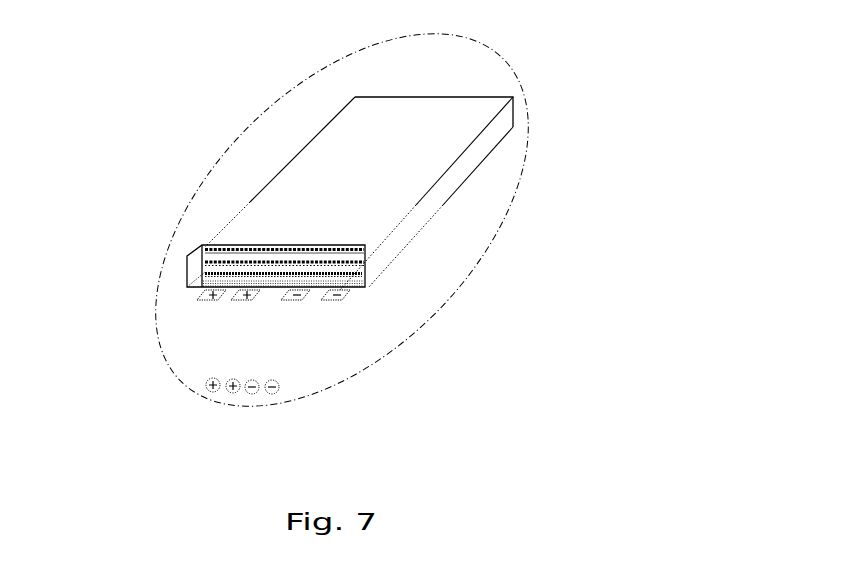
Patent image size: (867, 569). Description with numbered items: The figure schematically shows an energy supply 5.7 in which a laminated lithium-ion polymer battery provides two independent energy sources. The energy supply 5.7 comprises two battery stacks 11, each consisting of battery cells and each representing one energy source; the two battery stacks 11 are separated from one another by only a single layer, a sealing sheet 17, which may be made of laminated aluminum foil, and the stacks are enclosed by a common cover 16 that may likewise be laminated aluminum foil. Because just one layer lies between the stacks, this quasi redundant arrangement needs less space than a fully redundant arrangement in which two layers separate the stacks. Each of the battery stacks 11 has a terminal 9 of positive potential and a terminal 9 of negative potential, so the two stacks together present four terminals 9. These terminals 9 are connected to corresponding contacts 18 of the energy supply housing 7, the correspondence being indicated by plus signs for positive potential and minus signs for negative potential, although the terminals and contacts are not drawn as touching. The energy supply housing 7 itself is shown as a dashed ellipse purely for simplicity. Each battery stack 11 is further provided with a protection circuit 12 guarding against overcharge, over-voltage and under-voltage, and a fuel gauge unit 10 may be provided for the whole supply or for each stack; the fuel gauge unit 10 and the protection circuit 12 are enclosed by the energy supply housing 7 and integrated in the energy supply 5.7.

The energy supply housing 7 is at (246, 132).
The terminal 9 is at (208, 300).
The fuel gauge unit 10 is at (283, 283).
The battery stack 11 is at (353, 250).
The protection circuit 12 is at (188, 283).
The common cover 16 is at (257, 203).
The sealing sheet 17 is at (243, 263).
The contact 18 is at (214, 390).
The energy supply 5.7 is at (582, 73).